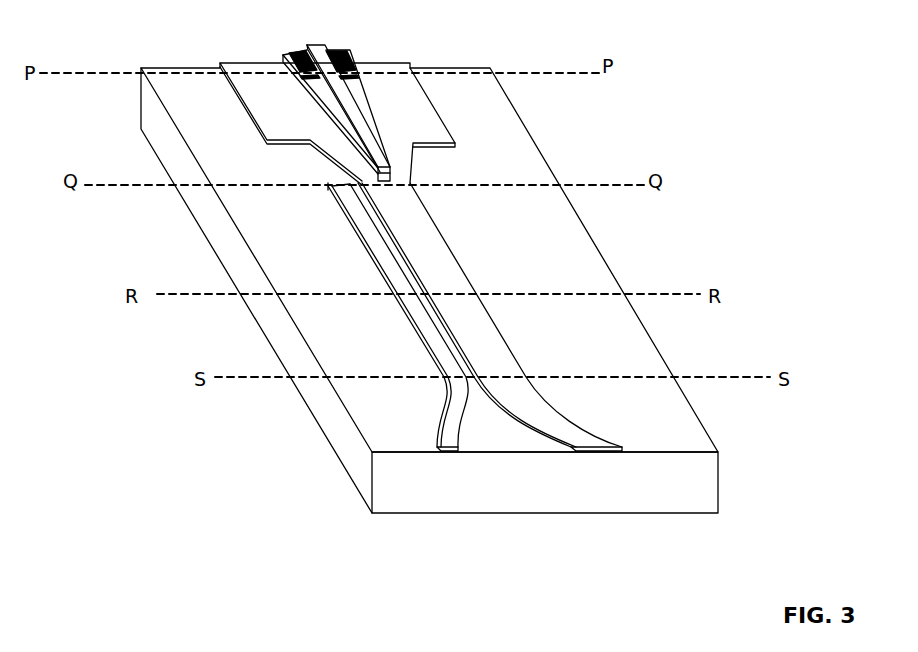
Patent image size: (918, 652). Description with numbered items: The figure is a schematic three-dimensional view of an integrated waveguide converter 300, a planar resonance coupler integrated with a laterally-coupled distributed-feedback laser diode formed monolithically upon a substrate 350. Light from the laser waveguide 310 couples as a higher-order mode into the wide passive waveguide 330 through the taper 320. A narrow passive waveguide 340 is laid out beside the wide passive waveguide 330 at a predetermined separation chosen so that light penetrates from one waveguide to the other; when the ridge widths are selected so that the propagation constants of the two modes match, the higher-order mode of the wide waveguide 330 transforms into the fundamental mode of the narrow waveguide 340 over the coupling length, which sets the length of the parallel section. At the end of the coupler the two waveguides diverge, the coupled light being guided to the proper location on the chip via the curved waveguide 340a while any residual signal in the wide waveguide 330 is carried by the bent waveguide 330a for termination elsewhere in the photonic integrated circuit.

The integrated waveguide converter 300 is at (717, 188).
The laser waveguide 310 is at (355, 60).
The taper 320 is at (367, 135).
The wide passive waveguide 330 is at (390, 212).
The bent waveguide 330a is at (542, 410).
The narrow passive waveguide 340 is at (375, 237).
The curved waveguide 340a is at (437, 418).
The substrate 350 is at (340, 410).